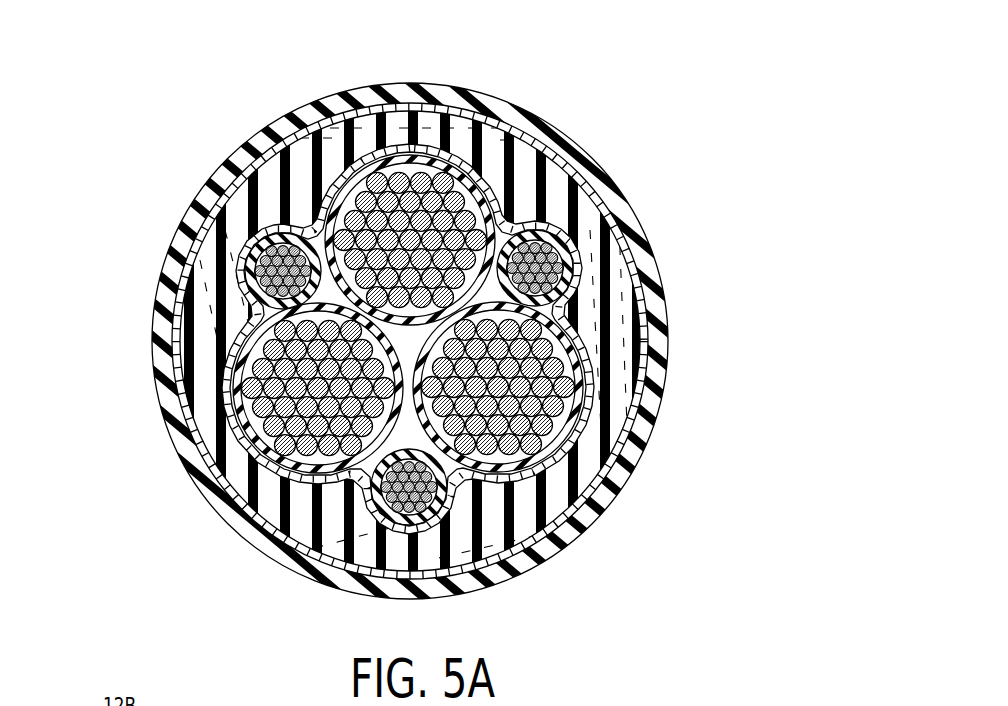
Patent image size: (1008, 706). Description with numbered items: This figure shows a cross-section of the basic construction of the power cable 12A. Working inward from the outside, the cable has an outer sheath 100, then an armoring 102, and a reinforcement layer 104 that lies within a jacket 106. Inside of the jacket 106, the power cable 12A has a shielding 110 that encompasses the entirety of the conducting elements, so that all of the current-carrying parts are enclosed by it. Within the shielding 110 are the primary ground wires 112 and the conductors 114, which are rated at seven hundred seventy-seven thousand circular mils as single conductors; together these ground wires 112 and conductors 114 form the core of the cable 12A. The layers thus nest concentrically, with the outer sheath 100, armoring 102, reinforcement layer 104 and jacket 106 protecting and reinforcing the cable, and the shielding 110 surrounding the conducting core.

The power cable 12A is at (493, 64).
The outer sheath 100 is at (223, 160).
The armoring 102 is at (183, 305).
The reinforcement layer 104 is at (570, 142).
The jacket 106 is at (543, 560).
The shielding 110 is at (578, 316).
The primary ground wires 112 is at (350, 550).
The conductors 114 is at (555, 406).